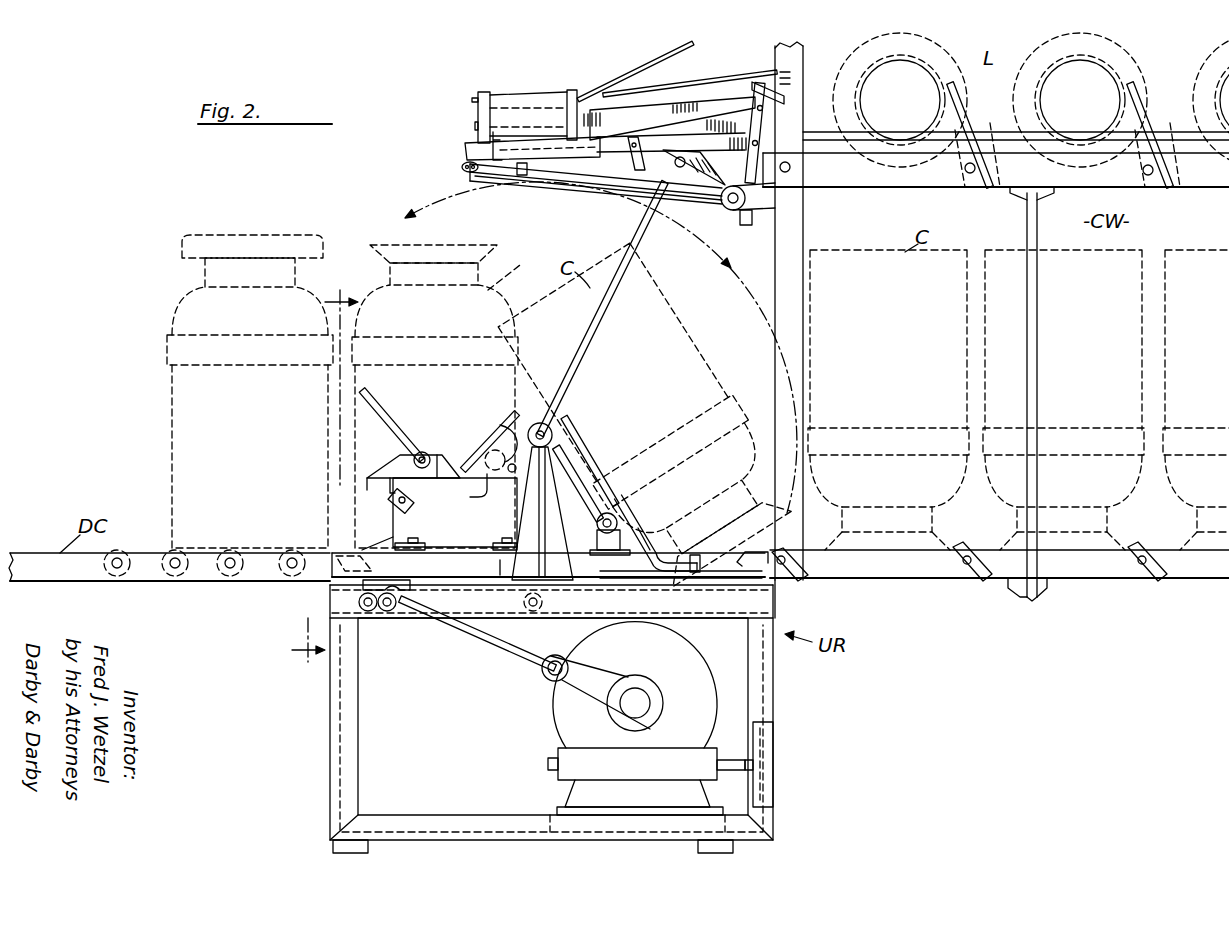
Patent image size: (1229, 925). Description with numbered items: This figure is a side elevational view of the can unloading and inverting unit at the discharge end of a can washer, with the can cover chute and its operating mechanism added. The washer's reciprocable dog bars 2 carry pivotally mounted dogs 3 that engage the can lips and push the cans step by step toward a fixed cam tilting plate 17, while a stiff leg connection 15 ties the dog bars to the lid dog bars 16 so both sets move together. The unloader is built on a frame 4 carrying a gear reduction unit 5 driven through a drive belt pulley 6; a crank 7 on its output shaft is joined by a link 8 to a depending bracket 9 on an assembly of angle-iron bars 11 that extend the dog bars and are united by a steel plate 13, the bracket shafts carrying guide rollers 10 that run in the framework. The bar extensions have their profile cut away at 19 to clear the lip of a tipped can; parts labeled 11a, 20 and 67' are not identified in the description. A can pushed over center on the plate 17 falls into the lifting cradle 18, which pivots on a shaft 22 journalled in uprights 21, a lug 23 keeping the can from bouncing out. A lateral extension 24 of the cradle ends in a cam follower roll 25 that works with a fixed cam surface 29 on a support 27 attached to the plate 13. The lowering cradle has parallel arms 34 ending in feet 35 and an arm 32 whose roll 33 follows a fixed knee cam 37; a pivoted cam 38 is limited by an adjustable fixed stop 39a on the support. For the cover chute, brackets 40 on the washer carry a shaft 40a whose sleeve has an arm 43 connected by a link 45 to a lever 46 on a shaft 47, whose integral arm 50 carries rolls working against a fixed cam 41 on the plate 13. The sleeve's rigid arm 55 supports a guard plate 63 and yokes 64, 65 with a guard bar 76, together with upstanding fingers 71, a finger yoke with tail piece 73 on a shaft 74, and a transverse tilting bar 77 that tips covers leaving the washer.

The dog bars 2 is at (920, 578).
The dogs 3 is at (960, 548).
The frame 4 is at (332, 743).
The gear reduction unit 5 is at (698, 662).
The drive belt pulley 6 is at (770, 722).
The crank 7 is at (570, 685).
The link 8 is at (485, 638).
The depending bracket 9 is at (392, 592).
The guide and supporting rollers 10 is at (358, 602).
The bars 11 is at (548, 564).
The delivery conveyor section 11a is at (335, 553).
The steel plate 13 is at (350, 548).
The stiff leg connection 15 is at (1038, 372).
The lid dog bars 16 is at (940, 187).
The cam tilting plate 17 is at (768, 552).
The lifting cradle 18 is at (656, 507).
The profile cut-away 19 is at (648, 576).
The frame member 20 is at (770, 602).
The uprights 21 is at (505, 565).
The shaft 22 is at (542, 423).
The lug 23 is at (695, 552).
The lateral extension 24 is at (590, 460).
The cam follower roll 25 is at (492, 481).
The support 27 is at (392, 488).
The fixed cam surface 29 is at (355, 482).
The arm 32 is at (500, 440).
The cam follower roll 33 is at (448, 480).
The parallel arms 34 is at (505, 418).
The feet 35 is at (360, 392).
The fixed knee cam 37 is at (481, 502).
The cam 38 is at (438, 453).
The adjustable fixed stop 39a is at (413, 507).
The brackets 40 is at (746, 220).
The shaft 40a is at (601, 347).
The fixed cam 41 is at (376, 531).
The arm 43 is at (706, 133).
The link 45 is at (606, 323).
The lever 46 is at (580, 482).
The shaft 47 is at (620, 523).
The arm 50 is at (650, 520).
The rigid arm 55 is at (637, 180).
The guard plate 63 is at (673, 107).
The U-shaped yoke 64 is at (572, 88).
The yoke 65 is at (484, 92).
The lower bar 67' is at (505, 152).
The upstanding fingers 71 is at (500, 142).
The tail piece 73 is at (572, 180).
The shaft 74 is at (522, 176).
The guard bar 76 is at (645, 62).
The tilting bar 77 is at (742, 70).